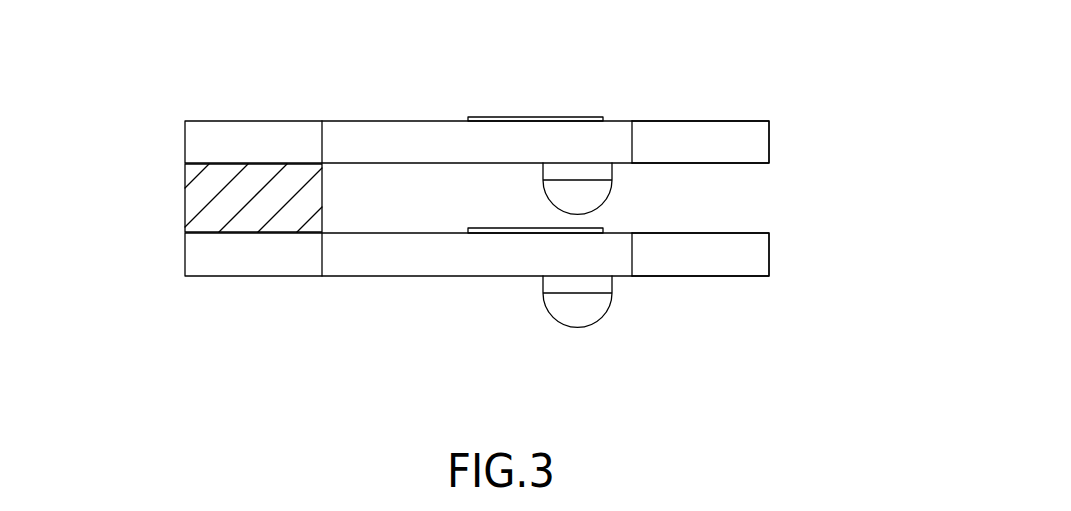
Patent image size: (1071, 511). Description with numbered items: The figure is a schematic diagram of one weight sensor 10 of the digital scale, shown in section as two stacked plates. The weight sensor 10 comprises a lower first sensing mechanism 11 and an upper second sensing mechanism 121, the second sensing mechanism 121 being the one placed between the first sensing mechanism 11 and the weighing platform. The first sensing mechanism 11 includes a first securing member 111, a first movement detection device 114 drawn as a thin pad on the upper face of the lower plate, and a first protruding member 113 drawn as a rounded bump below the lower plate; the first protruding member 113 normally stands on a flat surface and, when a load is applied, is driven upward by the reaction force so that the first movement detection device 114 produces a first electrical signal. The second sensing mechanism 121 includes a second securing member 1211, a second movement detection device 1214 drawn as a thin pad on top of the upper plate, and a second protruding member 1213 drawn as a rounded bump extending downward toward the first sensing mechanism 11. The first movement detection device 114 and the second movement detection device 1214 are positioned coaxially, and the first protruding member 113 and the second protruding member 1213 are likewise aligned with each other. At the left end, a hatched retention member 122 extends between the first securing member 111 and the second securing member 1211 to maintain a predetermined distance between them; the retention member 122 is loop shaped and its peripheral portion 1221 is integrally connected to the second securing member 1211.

The weight sensor 10 is at (187, 97).
The first sensing mechanism 11 is at (365, 292).
The first securing member 111 is at (755, 259).
The first protruding member 113 is at (591, 308).
The first movement detection device 114 is at (483, 233).
The second sensing mechanism 121 is at (767, 108).
The second securing member 1211 is at (685, 130).
The second protruding member 1213 is at (591, 197).
The second movement detection device 1214 is at (525, 117).
The retention member 122 is at (212, 191).
The peripheral portion 1221 is at (254, 213).